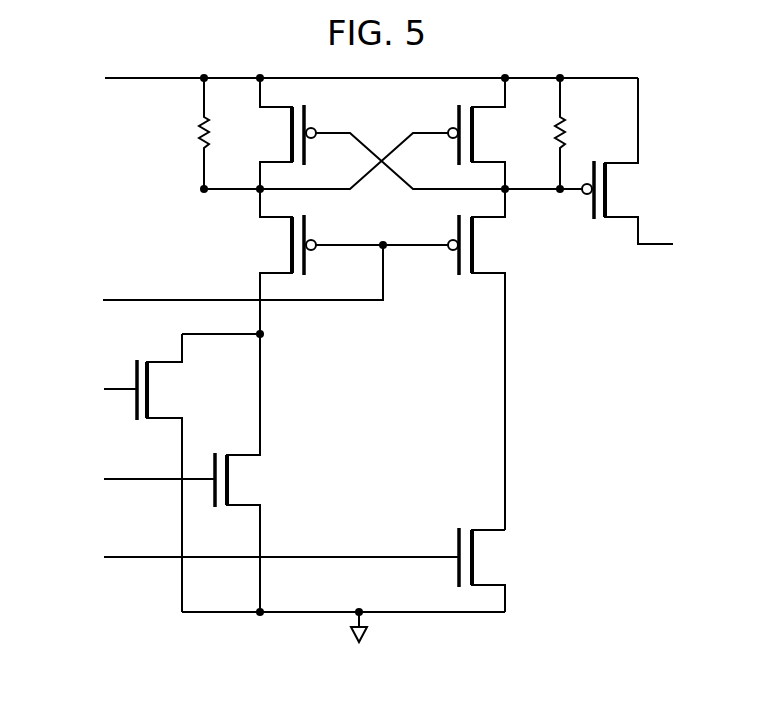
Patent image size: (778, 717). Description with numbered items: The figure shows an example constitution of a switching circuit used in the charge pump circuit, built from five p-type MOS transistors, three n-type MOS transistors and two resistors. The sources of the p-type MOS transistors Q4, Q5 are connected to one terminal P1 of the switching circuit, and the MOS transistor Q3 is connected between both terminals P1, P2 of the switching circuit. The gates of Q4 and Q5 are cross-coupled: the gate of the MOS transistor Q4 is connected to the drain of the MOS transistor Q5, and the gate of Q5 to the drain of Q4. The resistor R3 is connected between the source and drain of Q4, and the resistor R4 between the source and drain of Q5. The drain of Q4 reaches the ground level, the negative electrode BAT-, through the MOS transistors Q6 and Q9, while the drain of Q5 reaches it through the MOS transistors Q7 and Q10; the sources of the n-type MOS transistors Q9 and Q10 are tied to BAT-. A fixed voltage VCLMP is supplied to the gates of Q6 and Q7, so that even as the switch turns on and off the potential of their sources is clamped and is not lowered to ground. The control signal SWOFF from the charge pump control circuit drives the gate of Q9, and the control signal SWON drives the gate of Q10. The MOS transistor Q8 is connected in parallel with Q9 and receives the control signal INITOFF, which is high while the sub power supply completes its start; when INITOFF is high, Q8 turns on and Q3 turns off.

The one terminal of the switching circuit P1 is at (355, 78).
The terminal of the switching circuit P2 is at (681, 244).
The resistor R3 is at (189, 133).
The resistor R4 is at (574, 133).
The p-type MOS transistor Q3 is at (627, 161).
The p-type MOS transistor Q4 is at (369, 133).
The p-type MOS transistor Q5 is at (395, 133).
The p-type MOS transistor Q6 is at (308, 261).
The p-type MOS transistor Q7 is at (456, 359).
The n-type MOS transistor Q8 is at (172, 473).
The n-type MOS transistor Q9 is at (249, 473).
The n-type MOS transistor Q10 is at (500, 570).
The fixed voltage VCLMP is at (205, 277).
The control signal INITOFF is at (78, 389).
The control signal SWOFF is at (120, 479).
The control signal SWON is at (247, 557).
The negative electrode BAT- is at (356, 643).